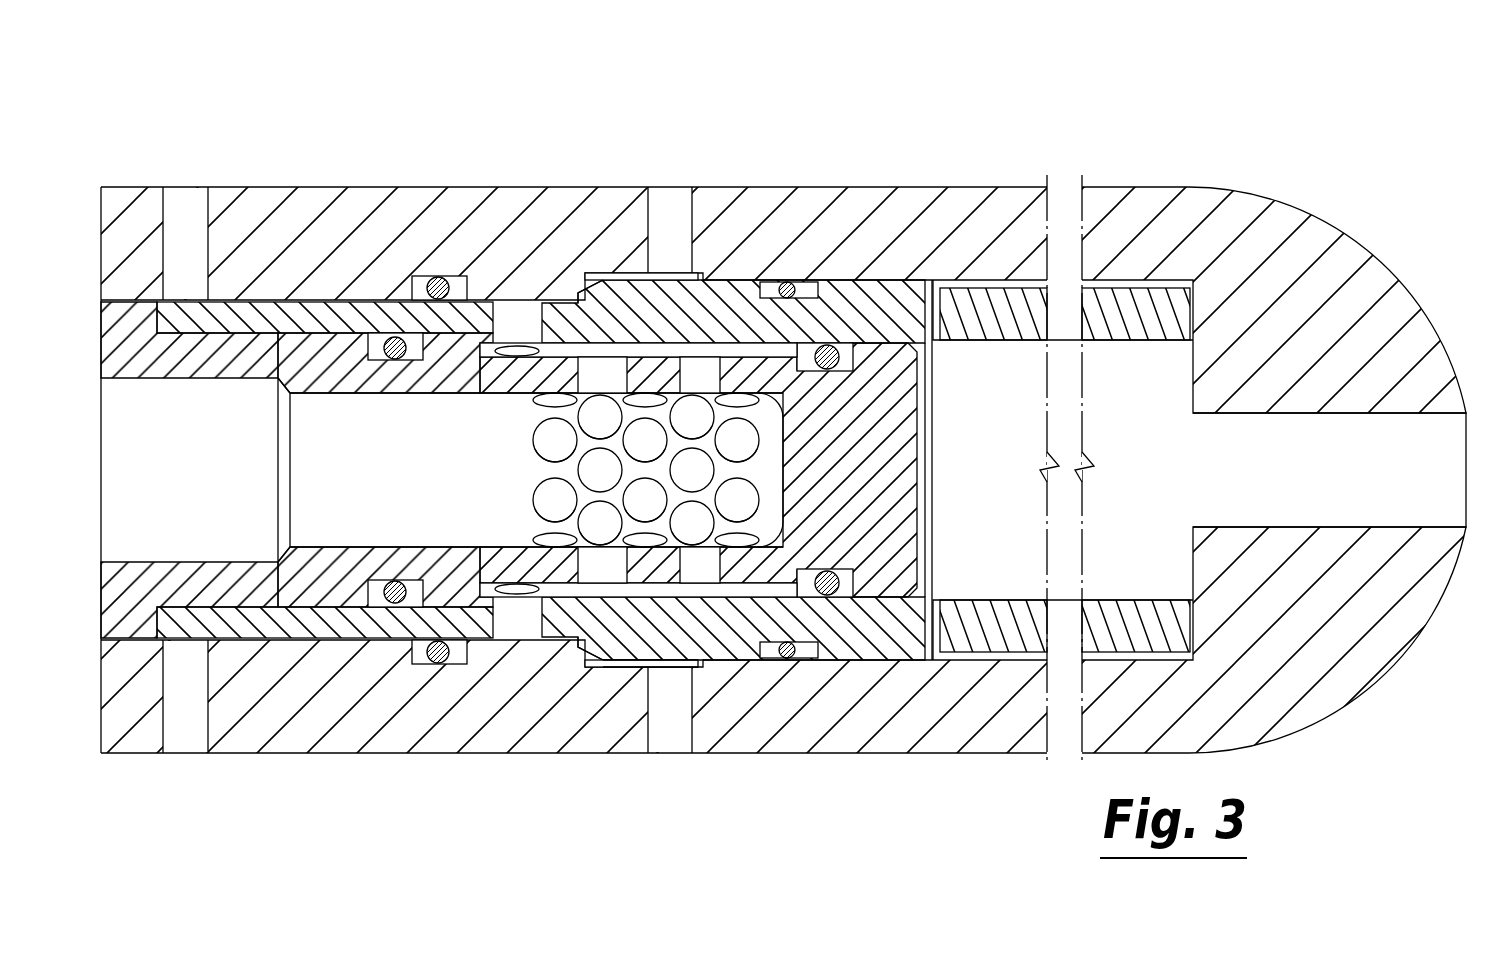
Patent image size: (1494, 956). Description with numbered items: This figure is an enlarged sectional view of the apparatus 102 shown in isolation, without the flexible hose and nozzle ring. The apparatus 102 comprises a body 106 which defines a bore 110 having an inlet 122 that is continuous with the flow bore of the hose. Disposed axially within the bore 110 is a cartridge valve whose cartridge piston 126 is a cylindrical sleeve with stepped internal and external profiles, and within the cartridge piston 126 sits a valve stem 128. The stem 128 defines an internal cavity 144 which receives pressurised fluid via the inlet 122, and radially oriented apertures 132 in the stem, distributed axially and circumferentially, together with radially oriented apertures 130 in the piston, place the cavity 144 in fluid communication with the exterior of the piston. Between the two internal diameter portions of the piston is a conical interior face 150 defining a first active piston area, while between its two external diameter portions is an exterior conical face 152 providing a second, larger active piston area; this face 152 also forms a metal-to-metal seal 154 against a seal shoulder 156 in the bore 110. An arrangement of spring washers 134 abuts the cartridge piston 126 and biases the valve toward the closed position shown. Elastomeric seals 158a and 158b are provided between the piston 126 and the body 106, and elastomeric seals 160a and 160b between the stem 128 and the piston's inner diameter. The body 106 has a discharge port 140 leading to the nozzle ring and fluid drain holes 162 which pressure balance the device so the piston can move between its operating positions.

The apparatus 102 is at (1003, 122).
The body 106 is at (538, 222).
The bore 110 is at (980, 368).
The inlet 122 is at (122, 537).
The cartridge piston 126 is at (320, 630).
The valve stem 128 is at (268, 587).
The radially oriented apertures 130 is at (505, 630).
The radially oriented apertures 132 is at (590, 572).
The arrangement of spring washers 134 is at (995, 640).
The discharge port 140 is at (685, 223).
The internal cavity 144 is at (320, 403).
The conical interior face 150 is at (470, 325).
The exterior conical face 152 is at (612, 280).
The metal-to-metal seal 154 is at (590, 285).
The seal shoulder 156 is at (640, 668).
The elastomeric seal 158a is at (436, 280).
The elastomeric seal 158b is at (800, 283).
The elastomeric seal 160a is at (390, 333).
The elastomeric seal 160b is at (842, 350).
The fluid drain holes 162 is at (190, 205).